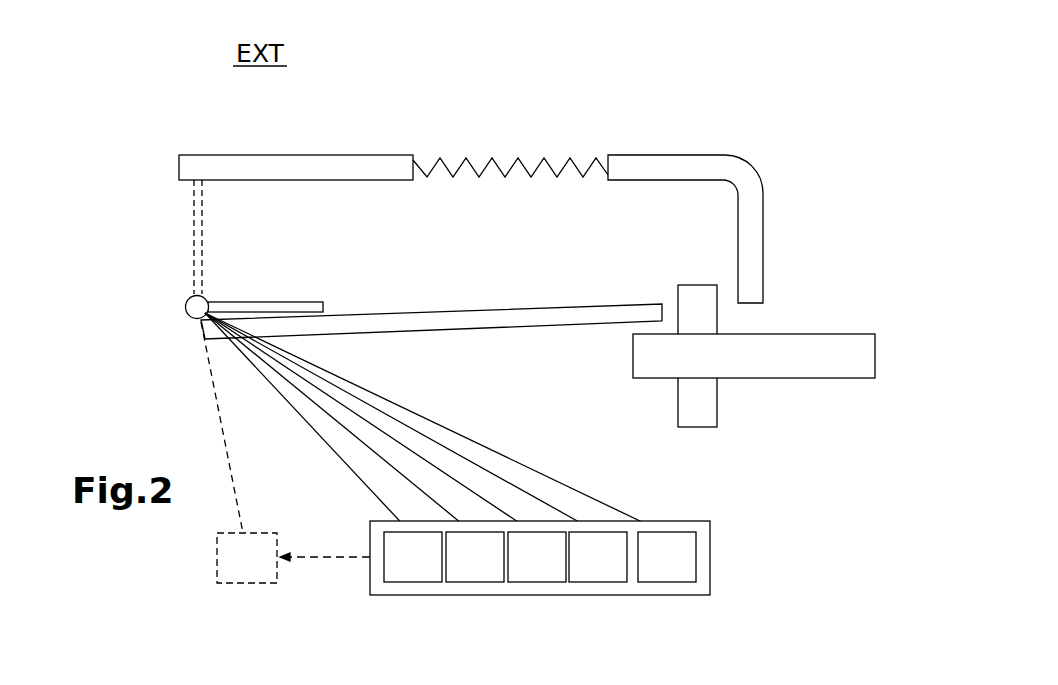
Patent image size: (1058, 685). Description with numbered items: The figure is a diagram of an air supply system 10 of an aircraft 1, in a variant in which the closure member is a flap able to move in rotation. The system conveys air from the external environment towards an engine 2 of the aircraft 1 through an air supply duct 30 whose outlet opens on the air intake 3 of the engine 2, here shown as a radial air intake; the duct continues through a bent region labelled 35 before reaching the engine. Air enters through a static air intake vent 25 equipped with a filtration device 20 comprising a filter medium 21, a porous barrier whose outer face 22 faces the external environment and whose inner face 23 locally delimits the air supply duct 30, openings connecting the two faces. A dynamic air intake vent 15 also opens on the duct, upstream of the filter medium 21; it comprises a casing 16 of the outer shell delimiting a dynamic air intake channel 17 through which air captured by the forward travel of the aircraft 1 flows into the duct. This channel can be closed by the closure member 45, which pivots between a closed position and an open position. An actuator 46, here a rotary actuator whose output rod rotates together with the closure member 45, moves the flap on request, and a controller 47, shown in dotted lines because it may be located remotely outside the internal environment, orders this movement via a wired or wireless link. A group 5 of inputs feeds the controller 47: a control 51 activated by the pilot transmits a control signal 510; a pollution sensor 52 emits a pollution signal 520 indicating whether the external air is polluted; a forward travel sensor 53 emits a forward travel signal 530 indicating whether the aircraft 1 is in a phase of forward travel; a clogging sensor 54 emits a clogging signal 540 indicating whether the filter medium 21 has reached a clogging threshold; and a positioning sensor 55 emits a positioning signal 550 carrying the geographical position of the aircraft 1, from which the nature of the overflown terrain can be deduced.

The aircraft 1 is at (757, 73).
The engine 2 is at (752, 408).
The air intake 3 is at (705, 285).
The air supply system 10 is at (650, 136).
The dynamic air intake vent 15 is at (178, 228).
The casing 16 is at (200, 155).
The dynamic air intake channel 17 is at (238, 216).
The filtration device 20 is at (464, 92).
The filter medium 21 is at (472, 157).
The outer face 22 is at (530, 150).
The inner face 23 is at (558, 186).
The static air intake vent 25 is at (430, 138).
The air supply duct 30 is at (565, 336).
The housing elbow 35 is at (763, 225).
The closure member 45 is at (158, 307).
The actuator 46 is at (337, 262).
The controller 47 is at (232, 570).
The sensor array 5 is at (540, 558).
The control 51 is at (398, 570).
The pollution sensor 52 is at (460, 570).
The forward travel sensor 53 is at (522, 570).
The clogging sensor 54 is at (583, 570).
The positioning sensor 55 is at (652, 570).
The control signal 510 is at (240, 372).
The pollution signal 520 is at (338, 422).
The forward travel signal 530 is at (375, 428).
The clogging signal 540 is at (495, 475).
The positioning signal 550 is at (573, 487).